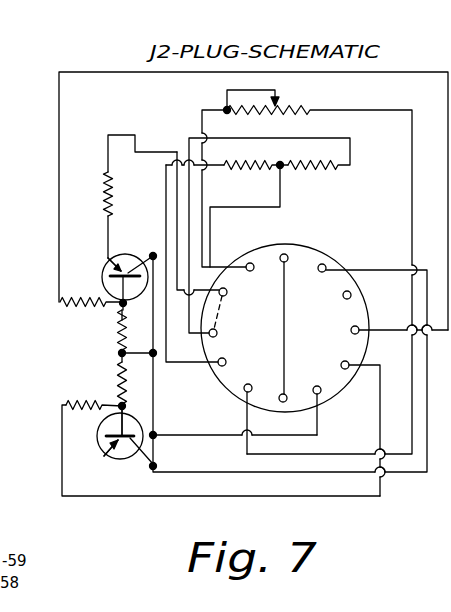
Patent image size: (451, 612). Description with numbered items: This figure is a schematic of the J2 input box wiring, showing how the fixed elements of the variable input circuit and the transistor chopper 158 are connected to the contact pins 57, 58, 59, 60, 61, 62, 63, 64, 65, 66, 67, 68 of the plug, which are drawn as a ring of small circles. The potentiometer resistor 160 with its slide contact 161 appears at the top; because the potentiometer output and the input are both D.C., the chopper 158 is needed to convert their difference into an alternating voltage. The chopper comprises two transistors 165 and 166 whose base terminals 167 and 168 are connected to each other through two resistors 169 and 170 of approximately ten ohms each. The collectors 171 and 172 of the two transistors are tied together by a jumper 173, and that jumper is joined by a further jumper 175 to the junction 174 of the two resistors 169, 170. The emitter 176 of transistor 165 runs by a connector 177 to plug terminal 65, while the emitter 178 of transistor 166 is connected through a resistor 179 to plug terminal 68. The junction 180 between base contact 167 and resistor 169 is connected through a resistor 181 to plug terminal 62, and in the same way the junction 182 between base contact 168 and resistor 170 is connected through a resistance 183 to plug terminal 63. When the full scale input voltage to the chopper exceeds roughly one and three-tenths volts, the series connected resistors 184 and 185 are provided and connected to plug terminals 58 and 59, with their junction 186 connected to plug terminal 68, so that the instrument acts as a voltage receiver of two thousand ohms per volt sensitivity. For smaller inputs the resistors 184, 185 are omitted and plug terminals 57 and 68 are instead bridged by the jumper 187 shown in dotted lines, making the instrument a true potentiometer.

The chopper 158 is at (106, 368).
The potentiometer resistor 160 is at (284, 106).
The slide contact 161 is at (240, 90).
The resistor 184 is at (338, 168).
The resistor 185 is at (262, 168).
The junction 186 is at (287, 158).
The resistor 179 is at (103, 192).
The emitter 178 is at (108, 240).
The collector 172 is at (130, 254).
The transistor 166 is at (108, 265).
The base terminal 168 is at (111, 276).
The resistance 183 is at (60, 303).
The junction 182 is at (125, 304).
The resistor 170 is at (118, 326).
The jumper 175 is at (127, 330).
The junction 174 is at (114, 351).
The resistor 169 is at (118, 383).
The junction 180 is at (125, 406).
The resistor 181 is at (66, 403).
The collector 171 is at (152, 469).
The transistor 165 is at (98, 426).
The base terminal 167 is at (100, 448).
The emitter 176 is at (104, 456).
The jumper 173 is at (154, 383).
The connector 177 is at (235, 472).
The jumper 187 is at (225, 310).
The contact pin 57 is at (210, 337).
The contact pin 58 is at (226, 362).
The contact pin 59 is at (245, 392).
The contact pin 60 is at (286, 402).
The contact pin 61 is at (321, 393).
The contact pin 62 is at (349, 364).
The contact pin 63 is at (359, 328).
The contact pin 64 is at (351, 294).
The contact pin 65 is at (326, 265).
The contact pin 66 is at (296, 239).
The contact pin 67 is at (251, 263).
The contact pin 68 is at (227, 292).